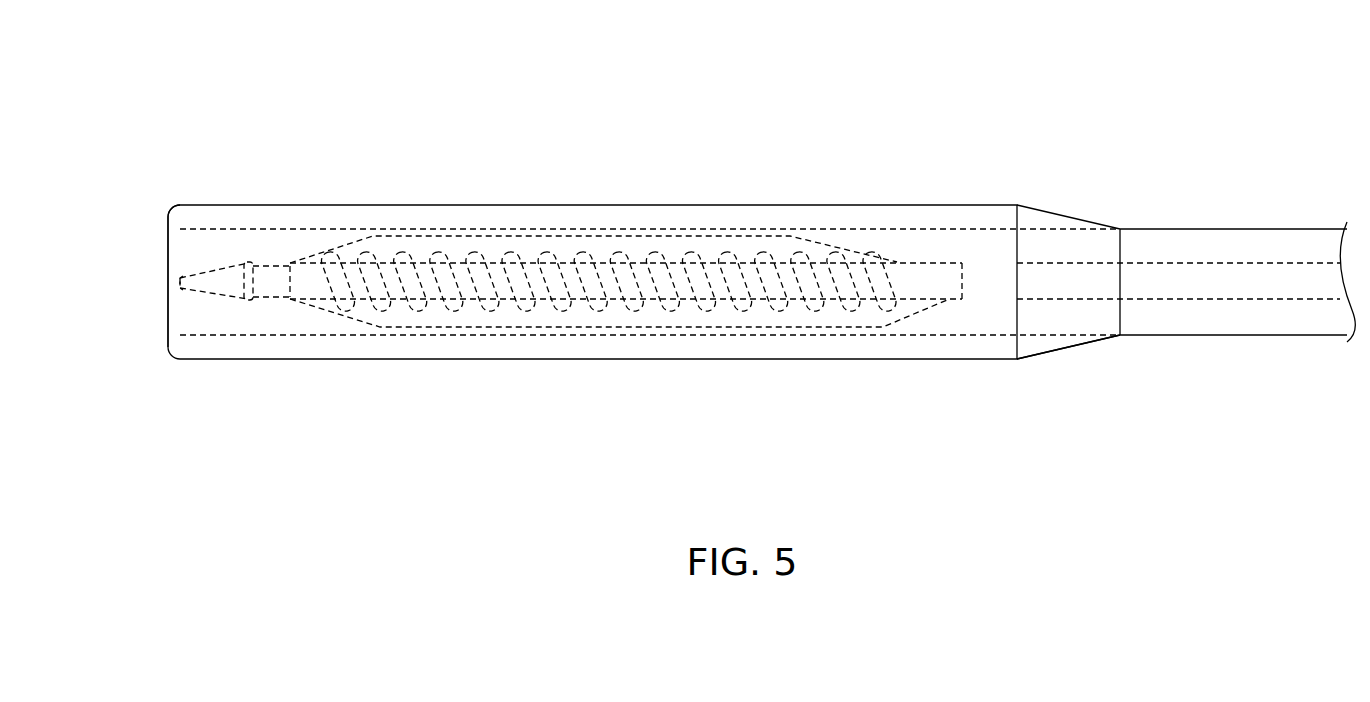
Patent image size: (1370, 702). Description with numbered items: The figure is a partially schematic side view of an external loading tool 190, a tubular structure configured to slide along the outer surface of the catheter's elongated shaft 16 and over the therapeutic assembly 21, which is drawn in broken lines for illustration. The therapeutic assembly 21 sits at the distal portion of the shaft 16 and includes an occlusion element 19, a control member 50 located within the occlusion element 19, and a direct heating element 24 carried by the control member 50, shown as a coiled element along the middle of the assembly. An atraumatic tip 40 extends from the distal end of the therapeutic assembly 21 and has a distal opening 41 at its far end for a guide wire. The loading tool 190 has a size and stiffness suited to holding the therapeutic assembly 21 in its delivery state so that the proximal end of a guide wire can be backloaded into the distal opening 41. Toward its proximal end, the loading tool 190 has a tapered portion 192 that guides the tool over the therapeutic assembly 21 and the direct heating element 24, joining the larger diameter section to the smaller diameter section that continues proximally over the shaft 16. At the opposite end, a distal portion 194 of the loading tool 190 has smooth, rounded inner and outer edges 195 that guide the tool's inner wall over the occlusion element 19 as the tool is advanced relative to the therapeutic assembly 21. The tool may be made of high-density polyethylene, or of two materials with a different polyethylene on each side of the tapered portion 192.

The elongated shaft 16 is at (1077, 262).
The occlusion element 19 is at (862, 252).
The therapeutic assembly 21 is at (962, 92).
The direct heating element 24 is at (572, 256).
The atraumatic tip 40 is at (216, 268).
The distal opening 41 is at (180, 283).
The control member 50 is at (274, 266).
The loading tool 190 is at (618, 359).
The tapered portion 192 is at (1052, 349).
The distal portion 194 is at (134, 318).
The rounded inner and outer edges 195 is at (170, 212).